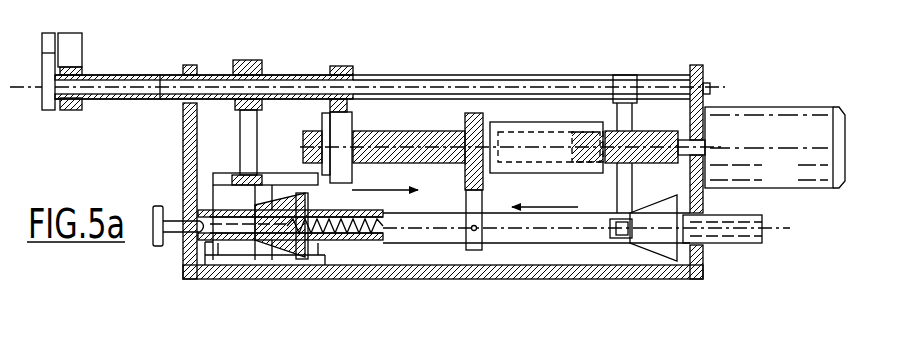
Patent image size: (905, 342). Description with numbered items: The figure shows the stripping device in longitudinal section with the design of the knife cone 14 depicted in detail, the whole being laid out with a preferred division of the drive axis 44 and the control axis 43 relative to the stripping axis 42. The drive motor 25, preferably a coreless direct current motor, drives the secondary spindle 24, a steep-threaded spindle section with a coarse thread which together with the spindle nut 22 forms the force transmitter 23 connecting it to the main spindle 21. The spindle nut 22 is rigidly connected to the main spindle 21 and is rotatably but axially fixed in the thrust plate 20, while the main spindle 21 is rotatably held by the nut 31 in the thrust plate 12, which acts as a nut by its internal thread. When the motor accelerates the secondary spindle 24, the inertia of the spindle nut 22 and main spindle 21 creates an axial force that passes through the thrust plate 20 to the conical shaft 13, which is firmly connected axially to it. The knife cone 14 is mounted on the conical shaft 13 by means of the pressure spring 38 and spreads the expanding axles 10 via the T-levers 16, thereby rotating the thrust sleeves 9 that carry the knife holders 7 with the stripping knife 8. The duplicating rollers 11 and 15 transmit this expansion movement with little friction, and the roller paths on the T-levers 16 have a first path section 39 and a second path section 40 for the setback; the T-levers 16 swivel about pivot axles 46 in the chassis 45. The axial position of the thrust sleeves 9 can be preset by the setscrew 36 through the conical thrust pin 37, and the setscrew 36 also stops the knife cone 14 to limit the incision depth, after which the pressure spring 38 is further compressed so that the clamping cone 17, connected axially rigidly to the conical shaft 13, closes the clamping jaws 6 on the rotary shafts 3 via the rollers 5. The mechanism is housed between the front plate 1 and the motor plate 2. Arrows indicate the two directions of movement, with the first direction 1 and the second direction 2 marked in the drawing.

The front plate 1 is at (545, 192).
The motor plate 2 is at (385, 181).
The rotary shaft 3 is at (503, 77).
The rollers for clamping procedure 5 is at (618, 238).
The clamping jaws 6 is at (48, 105).
The knife holder 7 is at (83, 61).
The stripping knife 8 is at (82, 45).
The thrust sleeve 9 is at (158, 73).
The expanding axles 10 is at (247, 115).
The duplicating roller 11 is at (238, 173).
The thrust plate with internal thread 12 is at (343, 66).
The conical shaft 13 is at (748, 240).
The knife cone 14 is at (287, 235).
The duplicating roller 15 is at (247, 252).
The T-lever 16 is at (313, 185).
The clamping cone 17 is at (657, 248).
The thrust plate 20 is at (485, 252).
The main spindle 21 is at (448, 130).
The spindle nut 22 is at (538, 125).
The force transmitter 23 is at (598, 118).
The secondary spindle 24 is at (647, 130).
The drive motor 25 is at (790, 128).
The nut in thrust plate 31 is at (358, 125).
The setscrew 36 is at (157, 247).
The conical thrust pin 37 is at (213, 209).
The pressure spring 38 is at (343, 241).
The first path section 39 is at (227, 157).
The second path section 40 is at (278, 167).
The stripping axis 42 is at (263, 83).
The control mechanism 43 is at (430, 228).
The drive axis 44 is at (727, 147).
The chassis 45 is at (692, 282).
The pivot axle for T-lever 46 is at (183, 272).